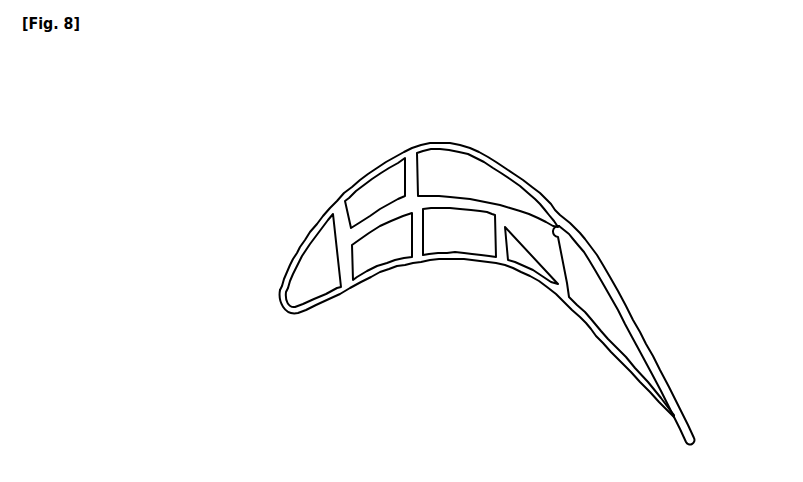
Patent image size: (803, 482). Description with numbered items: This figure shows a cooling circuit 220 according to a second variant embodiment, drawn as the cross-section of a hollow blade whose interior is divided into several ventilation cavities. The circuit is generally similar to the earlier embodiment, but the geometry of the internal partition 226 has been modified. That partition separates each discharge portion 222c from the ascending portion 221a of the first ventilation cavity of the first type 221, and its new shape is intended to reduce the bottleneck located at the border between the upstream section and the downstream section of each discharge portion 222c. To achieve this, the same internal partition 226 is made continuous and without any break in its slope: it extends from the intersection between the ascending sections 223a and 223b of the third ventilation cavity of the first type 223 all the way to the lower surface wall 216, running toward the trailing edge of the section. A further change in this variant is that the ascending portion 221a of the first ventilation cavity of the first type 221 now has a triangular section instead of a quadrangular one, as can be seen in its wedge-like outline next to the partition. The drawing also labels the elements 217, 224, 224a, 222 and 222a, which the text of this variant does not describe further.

The cooling circuit 220 is at (652, 221).
The suction side wall 217 is at (637, 320).
The lower surface wall 216 is at (603, 343).
The internal partition 226 is at (556, 229).
The leading edge segment 224 is at (266, 318).
The leading edge cavity 224a is at (317, 293).
The third ventilation cavity of the first type 223 is at (398, 317).
The ascending section of the third ventilation cavity of the first type 223a is at (374, 265).
The ascending section of the third ventilation cavity of the first type 223b is at (387, 182).
The second segment 222 is at (479, 314).
The second segment lower cavity 222a is at (455, 247).
The discharge portion 222c is at (463, 173).
The first ventilation cavity of the first type 221 is at (553, 327).
The ascending portion of the first ventilation cavity of the first type 221a is at (528, 263).